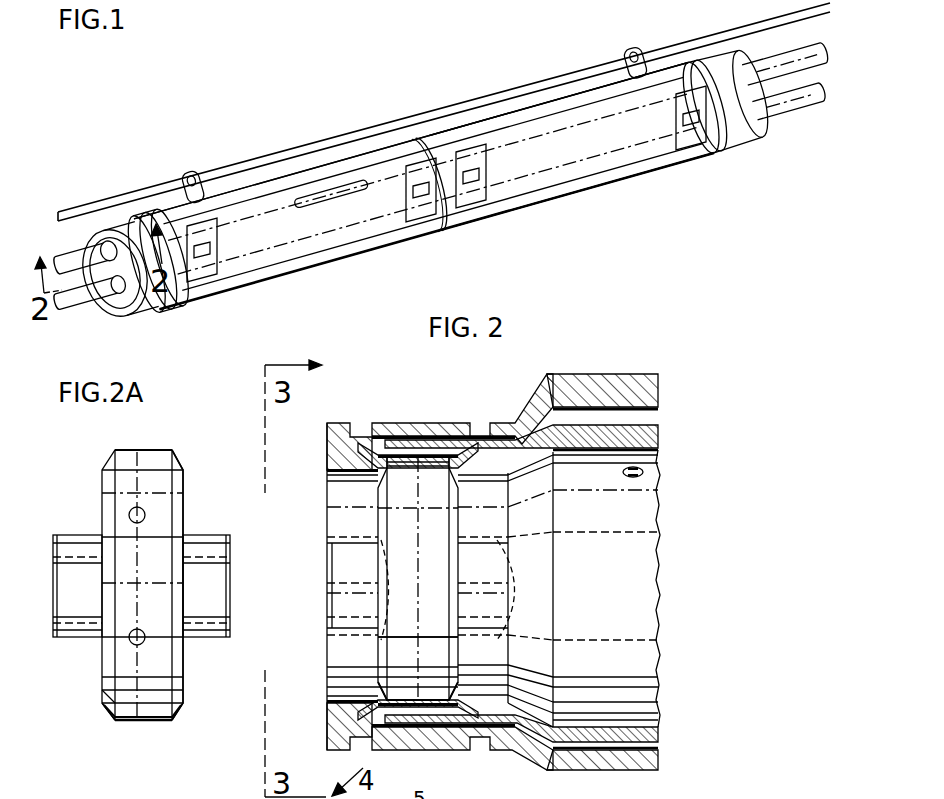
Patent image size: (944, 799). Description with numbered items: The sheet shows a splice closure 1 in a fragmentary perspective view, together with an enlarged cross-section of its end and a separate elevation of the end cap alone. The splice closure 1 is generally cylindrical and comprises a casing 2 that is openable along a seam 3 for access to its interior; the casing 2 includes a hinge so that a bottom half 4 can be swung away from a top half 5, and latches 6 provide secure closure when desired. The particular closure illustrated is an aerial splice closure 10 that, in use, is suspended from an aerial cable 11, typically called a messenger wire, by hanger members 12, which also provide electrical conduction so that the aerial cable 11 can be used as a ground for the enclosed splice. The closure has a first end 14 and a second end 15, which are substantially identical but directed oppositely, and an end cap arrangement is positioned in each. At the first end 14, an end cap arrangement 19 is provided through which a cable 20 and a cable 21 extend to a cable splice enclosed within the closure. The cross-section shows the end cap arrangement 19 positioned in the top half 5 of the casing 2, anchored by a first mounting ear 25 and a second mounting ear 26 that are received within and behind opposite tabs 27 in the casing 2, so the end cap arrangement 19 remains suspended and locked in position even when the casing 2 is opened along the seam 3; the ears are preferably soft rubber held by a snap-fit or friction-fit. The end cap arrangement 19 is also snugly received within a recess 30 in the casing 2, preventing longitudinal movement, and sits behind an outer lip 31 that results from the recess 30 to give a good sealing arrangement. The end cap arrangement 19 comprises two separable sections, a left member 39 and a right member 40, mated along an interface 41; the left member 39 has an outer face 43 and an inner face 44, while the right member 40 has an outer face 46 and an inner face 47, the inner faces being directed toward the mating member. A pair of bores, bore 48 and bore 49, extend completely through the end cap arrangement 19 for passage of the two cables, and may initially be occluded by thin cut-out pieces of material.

In FIG. 1, the splice closure 1 is at (452, 236).
In FIG. 1, the casing 2 is at (332, 264).
In FIG. 2, the casing 2 is at (568, 375).
In FIG. 1, the seam 3 is at (312, 206).
In FIG. 1, the bottom half 4 is at (244, 290).
In FIG. 1, the top half 5 is at (368, 150).
In FIG. 2, the top half 5 is at (338, 422).
In FIG. 1, the latches 6 is at (218, 252).
In FIG. 1, the aerial splice closure 10 is at (618, 190).
In FIG. 1, the aerial cable 11 is at (452, 106).
In FIG. 1, the hanger members 12 is at (193, 172).
In FIG. 1, the first end 14 is at (133, 306).
In FIG. 1, the second end 15 is at (737, 150).
In FIG. 1, the end cap arrangement 19 is at (103, 306).
In FIG. 2A, the end cap arrangement 19 is at (125, 447).
In FIG. 1, the cable 20 is at (85, 256).
In FIG. 1, the cable 21 is at (78, 312).
In FIG. 2A, the first mounting ear 25 is at (78, 640).
In FIG. 2, the first mounting ear 25 is at (340, 600).
In FIG. 2A, the second mounting ear 26 is at (228, 587).
In FIG. 2, the second mounting ear 26 is at (540, 572).
In FIG. 2, the tabs 27 is at (333, 537).
In FIG. 2, the recess 30 is at (438, 445).
In FIG. 2, the outer lip 31 is at (326, 448).
In FIG. 2A, the left member 39 is at (105, 718).
In FIG. 2, the left member 39 is at (398, 655).
In FIG. 2A, the right member 40 is at (177, 718).
In FIG. 2, the right member 40 is at (445, 634).
In FIG. 2A, the interface 41 is at (152, 448).
In FIG. 2, the interface 41 is at (418, 578).
In FIG. 2A, the outer face 43 is at (100, 700).
In FIG. 2A, the inner face 44 is at (131, 641).
In FIG. 2A, the outer face 46 is at (186, 483).
In FIG. 2A, the inner face 47 is at (150, 517).
In FIG. 1, the bore 48 is at (118, 236).
In FIG. 1, the bore 49 is at (149, 298).